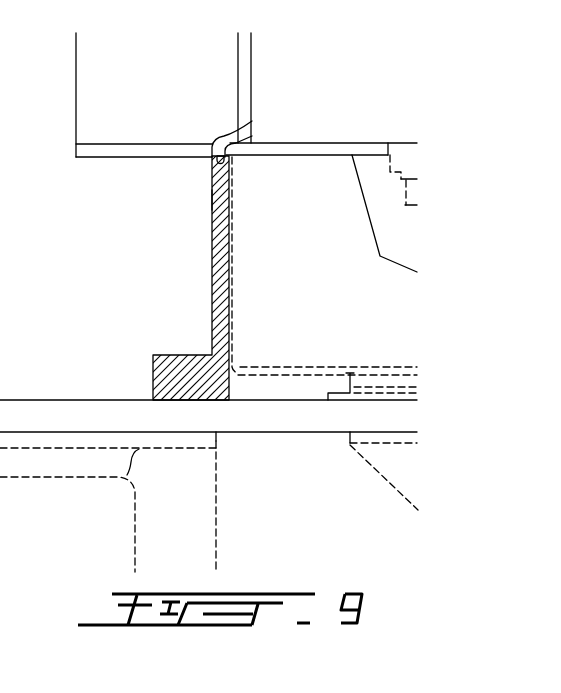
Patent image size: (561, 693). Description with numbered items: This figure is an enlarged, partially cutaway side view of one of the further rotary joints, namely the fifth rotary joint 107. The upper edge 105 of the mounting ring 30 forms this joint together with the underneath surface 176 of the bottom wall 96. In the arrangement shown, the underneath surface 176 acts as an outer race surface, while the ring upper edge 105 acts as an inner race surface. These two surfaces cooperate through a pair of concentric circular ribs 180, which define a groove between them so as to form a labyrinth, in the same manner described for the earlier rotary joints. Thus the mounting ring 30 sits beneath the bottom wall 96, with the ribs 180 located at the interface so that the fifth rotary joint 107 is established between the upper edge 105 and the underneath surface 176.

The bottom wall 96 is at (116, 148).
The pair of concentric circular ribs 180 is at (252, 136).
The underneath surface 176 is at (142, 158).
The fifth rotary joint 107 is at (198, 166).
The upper edge 105 is at (212, 198).
The mounting ring 30 is at (212, 288).